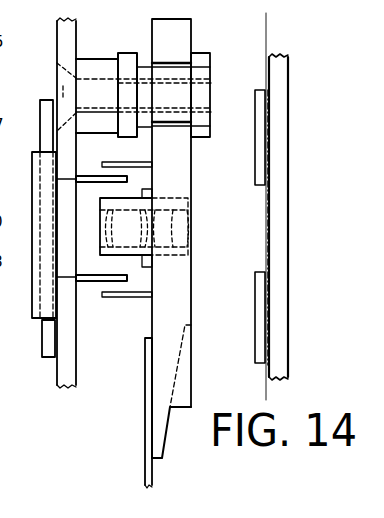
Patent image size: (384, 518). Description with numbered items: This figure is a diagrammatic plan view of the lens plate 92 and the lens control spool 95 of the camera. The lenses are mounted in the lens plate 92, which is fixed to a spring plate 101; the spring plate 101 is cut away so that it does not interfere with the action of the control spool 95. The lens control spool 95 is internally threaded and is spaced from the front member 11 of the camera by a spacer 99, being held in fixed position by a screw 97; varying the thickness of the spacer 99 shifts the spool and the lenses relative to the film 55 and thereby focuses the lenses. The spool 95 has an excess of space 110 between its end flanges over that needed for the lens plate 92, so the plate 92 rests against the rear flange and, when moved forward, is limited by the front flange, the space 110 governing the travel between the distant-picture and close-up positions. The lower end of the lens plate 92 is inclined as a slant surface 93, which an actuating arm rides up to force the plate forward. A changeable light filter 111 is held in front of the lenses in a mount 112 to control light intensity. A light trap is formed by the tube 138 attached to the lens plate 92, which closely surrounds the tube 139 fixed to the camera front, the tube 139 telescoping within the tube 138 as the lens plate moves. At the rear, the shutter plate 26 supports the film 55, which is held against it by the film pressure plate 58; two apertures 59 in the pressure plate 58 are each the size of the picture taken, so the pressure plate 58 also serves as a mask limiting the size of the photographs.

The front member 11 is at (65, 33).
The screw 97 is at (85, 90).
The spacer 99 is at (97, 122).
The space 110 is at (145, 132).
The lens control spool 95 is at (200, 65).
The lens plate 92 is at (163, 312).
The tube 139 is at (128, 180).
The tube 138 is at (128, 297).
The mount 112 is at (50, 303).
The light filter 111 is at (47, 343).
The slant surface 93 is at (174, 373).
The spring plate 101 is at (145, 418).
The film 55 is at (267, 213).
The shutter plate 26 is at (275, 110).
The aperture 59 is at (263, 232).
The film pressure plate 58 is at (258, 302).